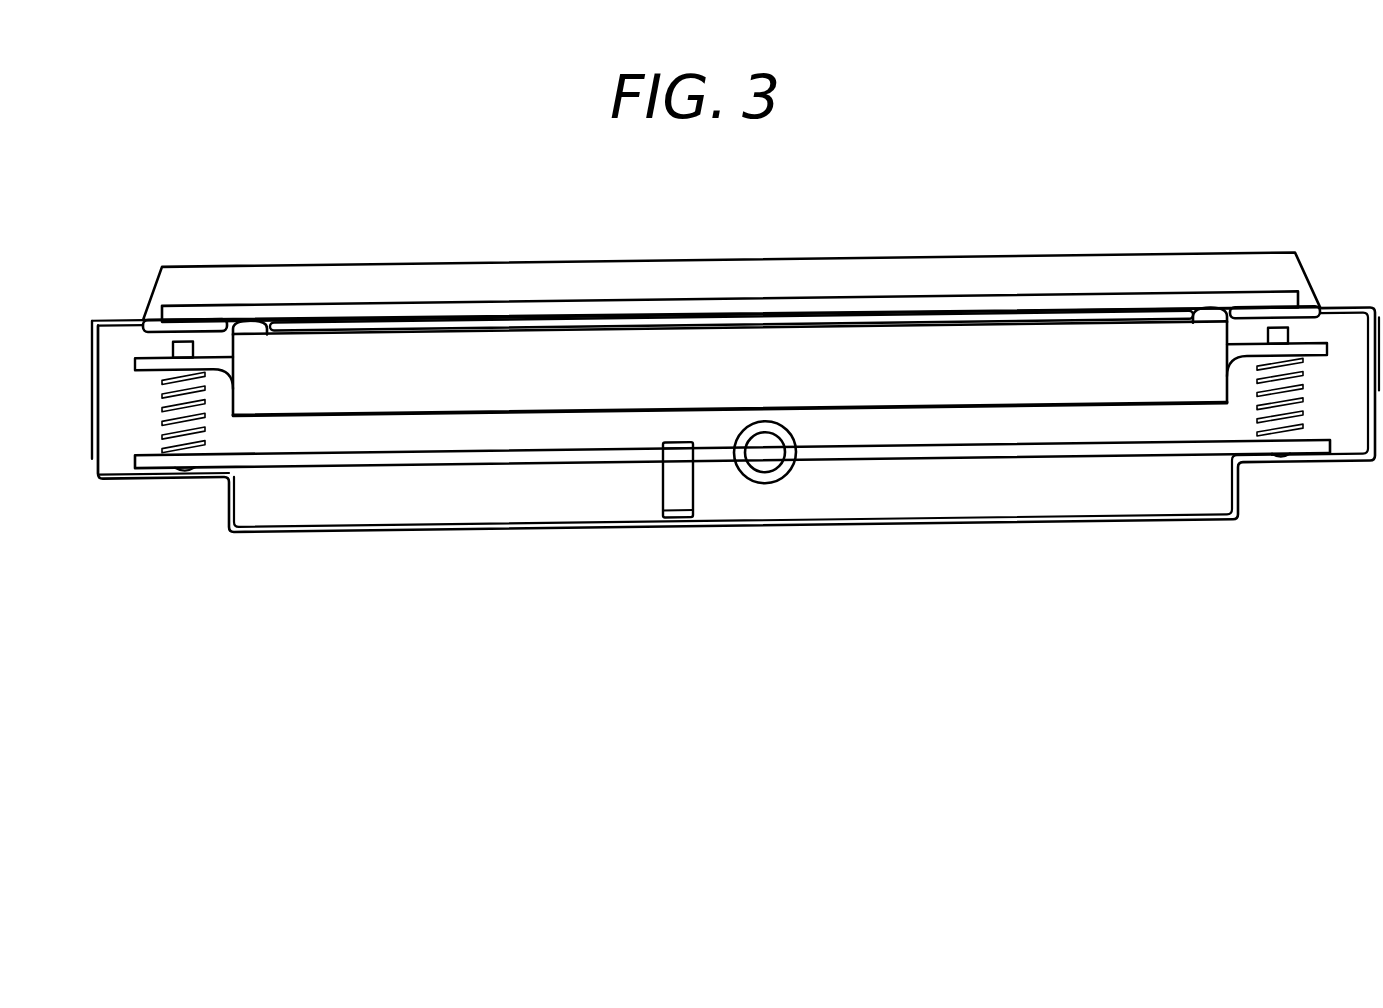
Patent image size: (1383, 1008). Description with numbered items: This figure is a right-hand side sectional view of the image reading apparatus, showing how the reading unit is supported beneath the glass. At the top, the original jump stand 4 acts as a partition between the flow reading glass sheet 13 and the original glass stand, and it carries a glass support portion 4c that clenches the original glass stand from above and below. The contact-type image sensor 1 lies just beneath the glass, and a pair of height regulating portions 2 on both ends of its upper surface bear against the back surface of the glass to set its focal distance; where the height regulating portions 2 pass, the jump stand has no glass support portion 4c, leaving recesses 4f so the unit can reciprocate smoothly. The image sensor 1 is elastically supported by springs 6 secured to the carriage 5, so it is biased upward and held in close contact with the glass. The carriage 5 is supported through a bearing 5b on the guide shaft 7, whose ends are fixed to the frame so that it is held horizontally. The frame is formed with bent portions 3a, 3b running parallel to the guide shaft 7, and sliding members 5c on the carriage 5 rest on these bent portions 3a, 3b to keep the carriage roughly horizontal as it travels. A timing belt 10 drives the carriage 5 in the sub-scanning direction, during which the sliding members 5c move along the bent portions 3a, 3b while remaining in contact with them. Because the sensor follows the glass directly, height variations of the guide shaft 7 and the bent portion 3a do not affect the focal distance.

The contact-type image sensor 1 is at (938, 343).
The height regulating portions 2 is at (250, 324).
The bent portion 3a is at (1330, 483).
The bent portion 3b is at (150, 482).
The original jump stand 4 is at (462, 282).
The glass support portion 4c is at (328, 323).
The recesses 4f is at (222, 322).
The carriage 5 is at (1052, 468).
The bearing 5b is at (782, 478).
The sliding members 5c is at (183, 472).
The springs 6 is at (165, 375).
The guide shaft 7 is at (760, 466).
The timing belt 10 is at (676, 524).
The flow reading glass sheet 13 is at (588, 311).